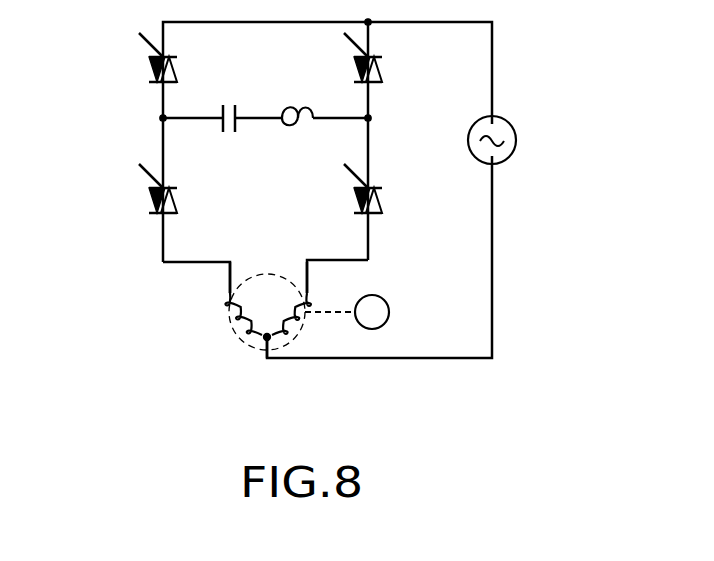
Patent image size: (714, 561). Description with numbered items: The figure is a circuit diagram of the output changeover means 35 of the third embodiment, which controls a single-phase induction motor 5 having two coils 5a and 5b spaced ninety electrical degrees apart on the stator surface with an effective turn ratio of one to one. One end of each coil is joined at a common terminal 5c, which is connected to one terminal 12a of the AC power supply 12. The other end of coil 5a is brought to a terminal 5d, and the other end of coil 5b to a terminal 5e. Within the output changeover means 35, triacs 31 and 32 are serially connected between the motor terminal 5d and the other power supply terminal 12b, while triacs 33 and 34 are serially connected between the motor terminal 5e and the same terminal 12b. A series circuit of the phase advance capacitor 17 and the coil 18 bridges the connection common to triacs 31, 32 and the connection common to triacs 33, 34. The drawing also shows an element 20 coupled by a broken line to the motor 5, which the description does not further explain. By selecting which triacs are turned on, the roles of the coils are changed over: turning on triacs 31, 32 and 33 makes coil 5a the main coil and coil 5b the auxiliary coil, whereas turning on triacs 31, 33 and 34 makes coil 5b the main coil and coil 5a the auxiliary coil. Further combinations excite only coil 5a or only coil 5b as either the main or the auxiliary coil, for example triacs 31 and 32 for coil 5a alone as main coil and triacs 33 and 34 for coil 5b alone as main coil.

The motor 5 is at (265, 336).
The coil 5a is at (238, 317).
The coil 5b is at (297, 322).
The common terminal 5c is at (260, 347).
The terminal 5d is at (228, 282).
The terminal 5e is at (308, 277).
The AC power supply 12 is at (516, 147).
The terminal 12a is at (494, 164).
The terminal 12b is at (494, 116).
The phase advance capacitor 17 is at (230, 135).
The coil 18 is at (298, 123).
The control circuit 20 is at (389, 312).
The triac 31 is at (150, 195).
The triac 32 is at (148, 67).
The triac 33 is at (384, 205).
The triac 34 is at (382, 70).
The output changeover means 35 is at (133, 135).